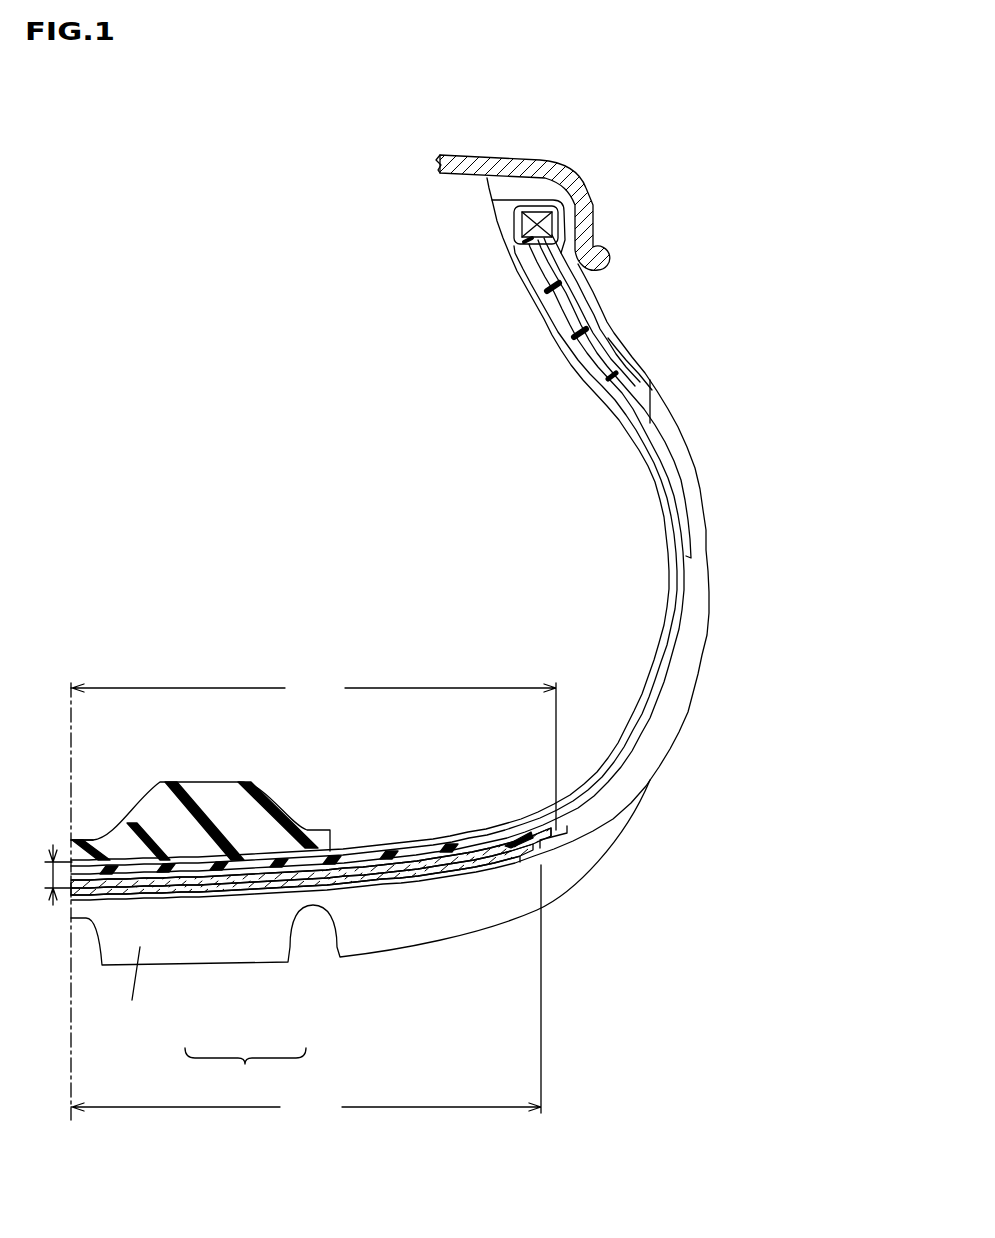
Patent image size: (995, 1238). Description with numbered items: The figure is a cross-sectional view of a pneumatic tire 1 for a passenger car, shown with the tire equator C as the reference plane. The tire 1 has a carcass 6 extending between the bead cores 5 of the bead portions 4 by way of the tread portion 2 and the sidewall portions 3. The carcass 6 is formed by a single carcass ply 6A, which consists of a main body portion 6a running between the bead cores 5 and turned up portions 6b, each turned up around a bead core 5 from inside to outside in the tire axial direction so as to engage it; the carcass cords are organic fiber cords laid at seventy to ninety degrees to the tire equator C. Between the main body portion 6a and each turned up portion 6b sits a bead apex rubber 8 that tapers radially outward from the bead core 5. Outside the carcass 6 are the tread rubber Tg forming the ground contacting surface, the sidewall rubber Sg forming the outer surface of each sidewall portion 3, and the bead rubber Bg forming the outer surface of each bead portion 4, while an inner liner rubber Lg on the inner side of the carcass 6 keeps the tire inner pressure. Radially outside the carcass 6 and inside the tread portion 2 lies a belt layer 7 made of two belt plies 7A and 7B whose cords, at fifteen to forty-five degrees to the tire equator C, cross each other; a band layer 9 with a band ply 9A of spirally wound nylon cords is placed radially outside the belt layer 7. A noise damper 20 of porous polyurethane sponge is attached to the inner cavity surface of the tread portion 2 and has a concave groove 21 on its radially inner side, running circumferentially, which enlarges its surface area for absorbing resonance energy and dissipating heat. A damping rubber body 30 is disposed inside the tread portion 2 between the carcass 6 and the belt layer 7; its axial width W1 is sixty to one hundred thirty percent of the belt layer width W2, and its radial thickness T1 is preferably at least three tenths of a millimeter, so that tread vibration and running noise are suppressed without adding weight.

The pneumatic tire 1 is at (629, 1019).
The tread portion 2 is at (364, 966).
The sidewall portion 3 is at (725, 626).
The bead portion 4 is at (657, 326).
The bead core 5 is at (535, 222).
The carcass 6 is at (637, 740).
The carcass ply 6A is at (311, 854).
The main body portion 6a is at (625, 407).
The turned up portion 6b is at (682, 517).
The belt layer 7 is at (245, 1072).
The belt ply 7A is at (185, 883).
The belt ply 7B is at (242, 888).
The bead apex rubber 8 is at (565, 312).
The band layer 9 is at (443, 880).
The band ply 9A is at (536, 837).
The noise damper 20 is at (222, 803).
The concave groove 21 is at (90, 837).
The damping rubber body 30 is at (350, 868).
The tire equator C is at (68, 887).
The width of the damping rubber body W1 is at (313, 753).
The width of the belt layer W2 is at (306, 994).
The thickness of the damping rubber body T1 is at (40, 875).
The tread rubber Tg is at (140, 947).
The inner liner rubber Lg is at (668, 642).
The sidewall rubber Sg is at (675, 703).
The bead rubber Bg is at (592, 307).